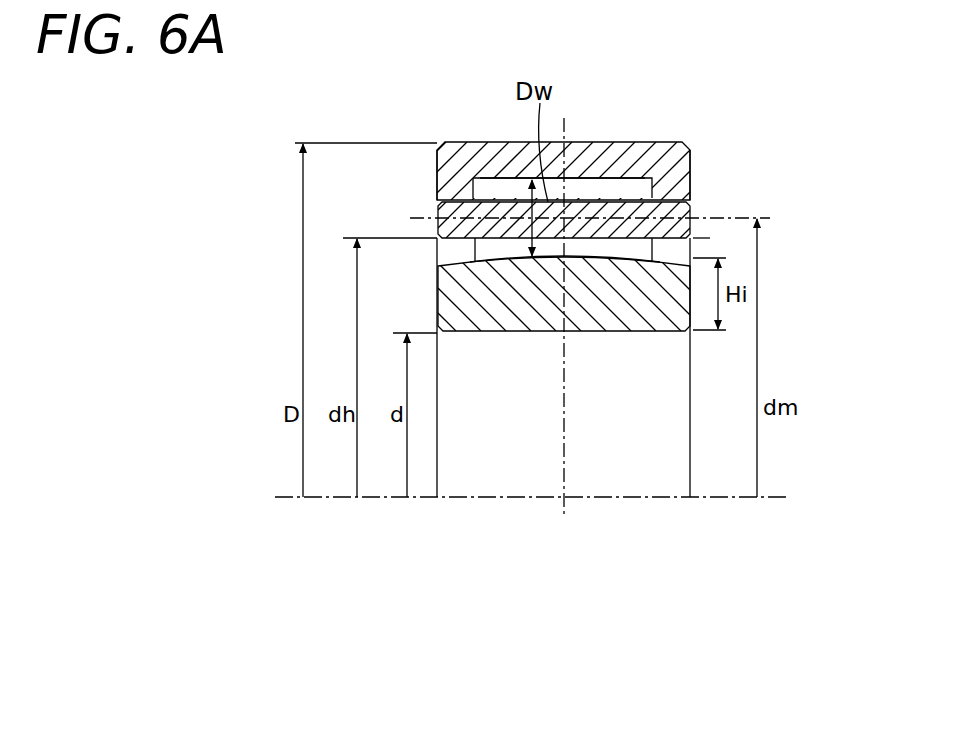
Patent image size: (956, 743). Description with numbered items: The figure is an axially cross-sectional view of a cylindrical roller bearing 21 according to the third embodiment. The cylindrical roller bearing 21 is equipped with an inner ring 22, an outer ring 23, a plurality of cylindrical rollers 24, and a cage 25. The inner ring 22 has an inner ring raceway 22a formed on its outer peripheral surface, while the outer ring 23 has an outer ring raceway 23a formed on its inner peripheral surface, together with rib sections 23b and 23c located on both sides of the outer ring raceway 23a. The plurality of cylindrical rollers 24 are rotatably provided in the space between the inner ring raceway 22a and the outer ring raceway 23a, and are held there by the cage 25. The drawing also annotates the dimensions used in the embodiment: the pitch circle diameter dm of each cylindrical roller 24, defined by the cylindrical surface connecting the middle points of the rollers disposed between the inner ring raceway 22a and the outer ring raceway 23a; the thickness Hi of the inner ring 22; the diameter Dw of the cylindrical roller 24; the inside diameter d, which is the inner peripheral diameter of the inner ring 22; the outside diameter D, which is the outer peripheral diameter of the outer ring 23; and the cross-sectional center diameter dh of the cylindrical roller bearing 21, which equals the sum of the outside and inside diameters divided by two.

The cylindrical roller bearing 21 is at (577, 217).
The inner ring 22 is at (658, 318).
The inner ring raceway 22a is at (598, 252).
The outer ring 23 is at (656, 142).
The outer ring raceway 23a is at (598, 185).
The rib section 23b is at (437, 172).
The rib section 23c is at (678, 183).
The cylindrical roller 24 is at (497, 248).
The cage 25 is at (688, 212).